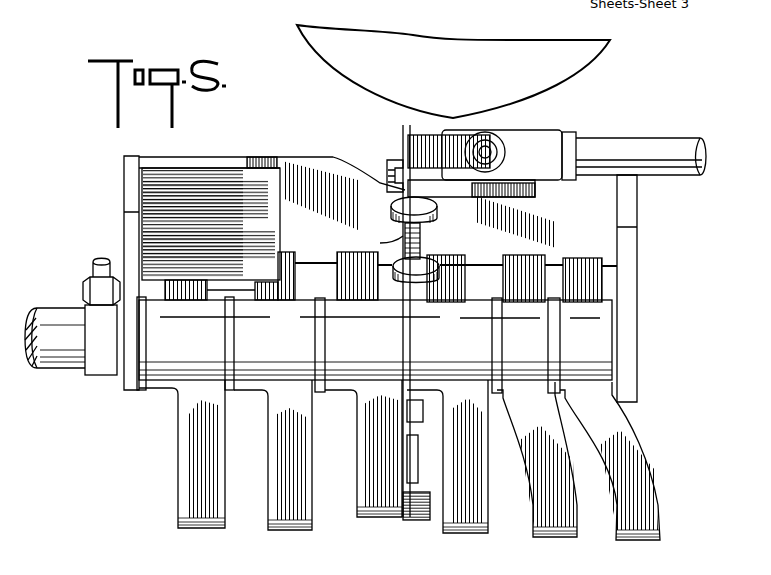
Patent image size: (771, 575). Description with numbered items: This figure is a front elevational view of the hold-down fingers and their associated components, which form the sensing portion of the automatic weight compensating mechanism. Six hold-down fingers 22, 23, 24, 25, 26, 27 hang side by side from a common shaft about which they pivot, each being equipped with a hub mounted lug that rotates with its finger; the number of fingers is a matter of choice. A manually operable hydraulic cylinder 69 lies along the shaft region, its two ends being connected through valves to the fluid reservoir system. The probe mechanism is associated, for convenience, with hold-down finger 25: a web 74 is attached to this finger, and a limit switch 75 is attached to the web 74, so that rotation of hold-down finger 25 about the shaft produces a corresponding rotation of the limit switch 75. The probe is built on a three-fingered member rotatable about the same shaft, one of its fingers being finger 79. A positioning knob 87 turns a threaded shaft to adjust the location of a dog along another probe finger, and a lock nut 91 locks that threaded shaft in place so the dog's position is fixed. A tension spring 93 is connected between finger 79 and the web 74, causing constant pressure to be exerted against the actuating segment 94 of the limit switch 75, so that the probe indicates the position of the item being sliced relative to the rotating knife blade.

The hold-down finger 22 is at (660, 537).
The hold-down finger 23 is at (577, 533).
The hold-down finger 24 is at (488, 530).
The hold-down finger 25 is at (357, 517).
The hold-down finger 26 is at (268, 525).
The hold-down finger 27 is at (178, 522).
The manually operable hydraulic cylinder 69 is at (45, 362).
The web 74 is at (380, 240).
The limit switch 75 is at (385, 574).
The finger 79 is at (391, 209).
The positioning knob 87 is at (430, 220).
The lock nut 91 is at (430, 268).
The tension spring 93 is at (393, 183).
The actuating segment 94 is at (507, 152).